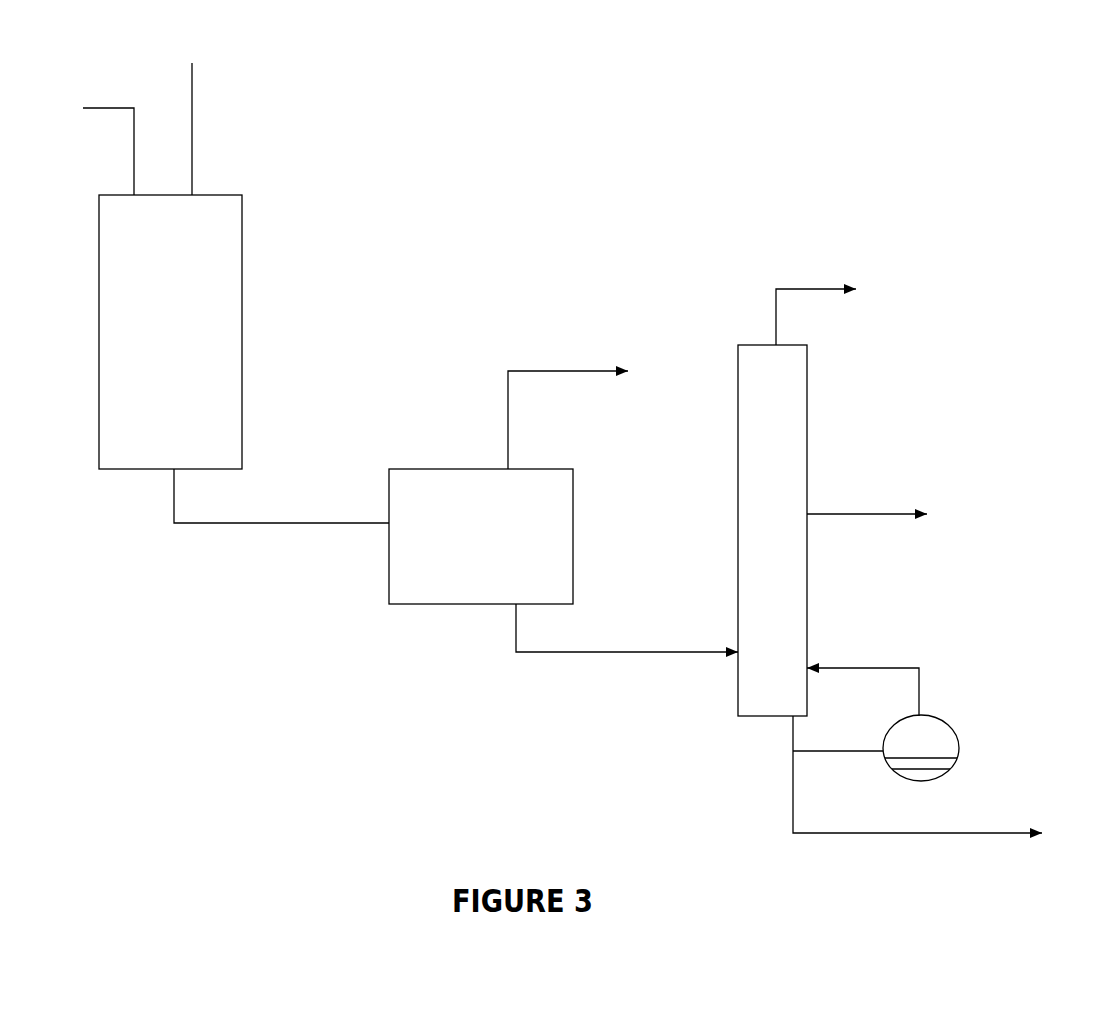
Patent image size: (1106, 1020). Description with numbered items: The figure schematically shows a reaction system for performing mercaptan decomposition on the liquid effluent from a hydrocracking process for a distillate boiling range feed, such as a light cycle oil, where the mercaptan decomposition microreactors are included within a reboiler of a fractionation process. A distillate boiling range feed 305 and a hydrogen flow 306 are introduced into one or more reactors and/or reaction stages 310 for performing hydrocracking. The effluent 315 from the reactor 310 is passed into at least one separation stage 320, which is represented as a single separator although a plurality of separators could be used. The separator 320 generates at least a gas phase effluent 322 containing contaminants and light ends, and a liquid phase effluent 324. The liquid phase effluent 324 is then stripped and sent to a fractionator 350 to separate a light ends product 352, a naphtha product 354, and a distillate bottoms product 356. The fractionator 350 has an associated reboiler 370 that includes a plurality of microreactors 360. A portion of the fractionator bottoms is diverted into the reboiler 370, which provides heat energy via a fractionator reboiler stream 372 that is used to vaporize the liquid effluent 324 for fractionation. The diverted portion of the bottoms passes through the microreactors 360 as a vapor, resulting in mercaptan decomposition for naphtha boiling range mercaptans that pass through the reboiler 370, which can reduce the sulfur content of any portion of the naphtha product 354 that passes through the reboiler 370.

The distillate boiling range feed 305 is at (100, 98).
The hydrogen flow 306 is at (212, 127).
The reactor 310 is at (212, 312).
The effluent 315 is at (295, 488).
The separation stage 320 is at (543, 539).
The gas phase effluent 322 is at (537, 343).
The liquid phase effluent 324 is at (546, 669).
The fractionator 350 is at (776, 407).
The light ends product 352 is at (816, 272).
The naphtha product 354 is at (855, 495).
The distillate (bottoms) product 356 is at (775, 787).
The microreactors 360 is at (958, 769).
The reboiler 370 is at (928, 737).
The fractionator reboiler stream 372 is at (883, 645).